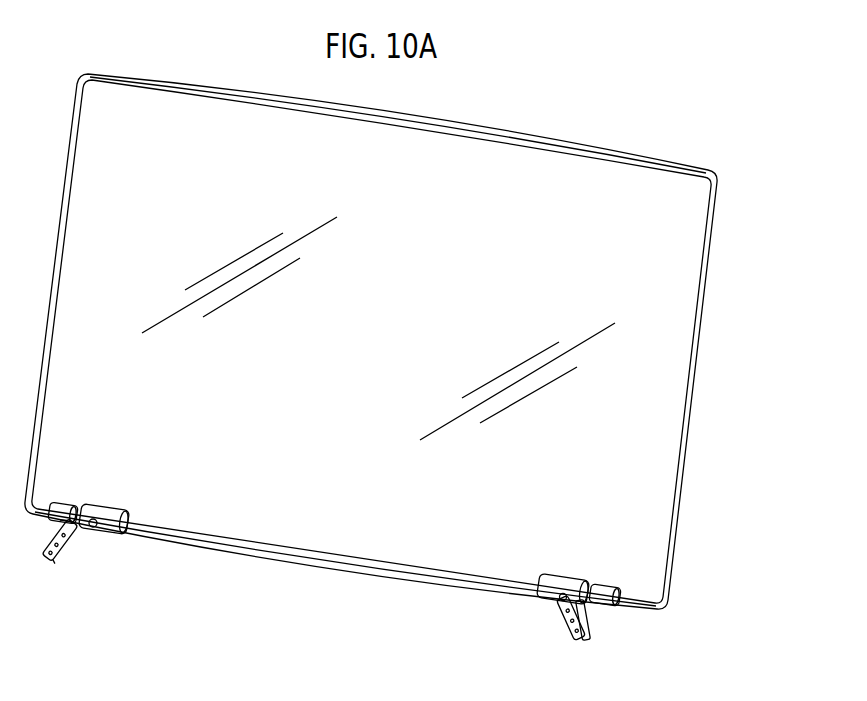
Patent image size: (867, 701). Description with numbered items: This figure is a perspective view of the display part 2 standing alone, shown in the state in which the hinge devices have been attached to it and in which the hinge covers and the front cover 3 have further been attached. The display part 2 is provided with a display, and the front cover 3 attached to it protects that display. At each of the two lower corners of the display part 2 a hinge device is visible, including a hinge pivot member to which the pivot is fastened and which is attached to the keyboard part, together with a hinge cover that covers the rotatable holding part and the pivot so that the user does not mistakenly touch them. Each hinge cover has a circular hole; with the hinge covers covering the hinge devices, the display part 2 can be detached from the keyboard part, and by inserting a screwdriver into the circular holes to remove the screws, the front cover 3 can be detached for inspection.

The display part 2 is at (657, 155).
The front cover 3 is at (370, 329).